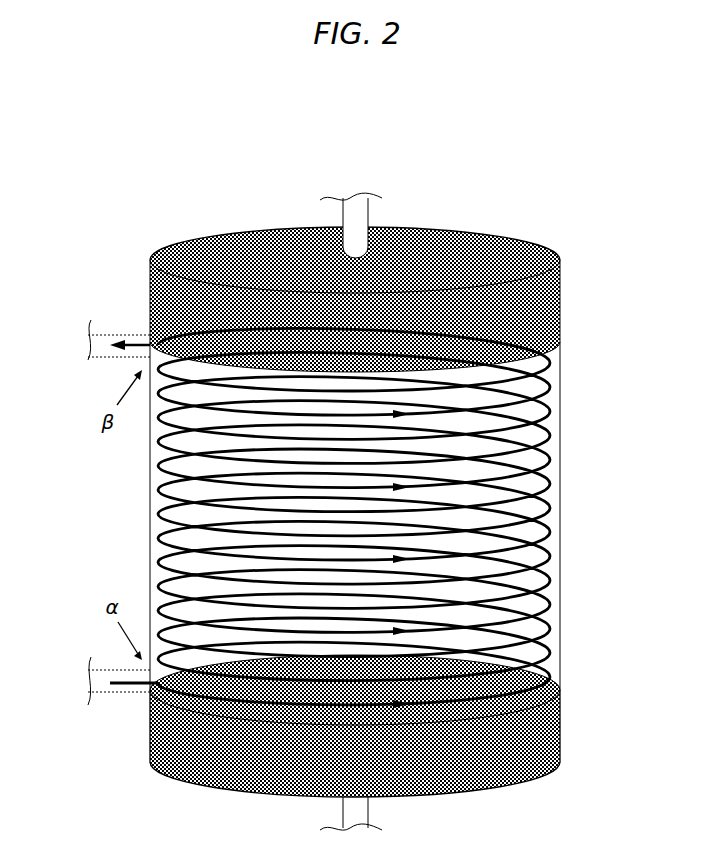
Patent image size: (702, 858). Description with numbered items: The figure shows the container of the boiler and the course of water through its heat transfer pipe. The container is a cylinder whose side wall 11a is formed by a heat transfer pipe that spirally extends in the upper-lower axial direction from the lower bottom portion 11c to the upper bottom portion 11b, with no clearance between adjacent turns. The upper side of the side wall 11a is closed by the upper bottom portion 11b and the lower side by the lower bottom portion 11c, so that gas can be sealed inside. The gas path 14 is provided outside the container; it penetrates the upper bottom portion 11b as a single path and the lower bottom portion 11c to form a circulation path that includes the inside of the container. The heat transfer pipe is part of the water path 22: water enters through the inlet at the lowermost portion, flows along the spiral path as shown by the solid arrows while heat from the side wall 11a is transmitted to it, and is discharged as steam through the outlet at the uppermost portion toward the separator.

The side wall 11a is at (150, 516).
The upper bottom portion 11b is at (238, 242).
The lower bottom portion 11c is at (210, 768).
The gas path 14 is at (370, 221).
The water path 22 is at (110, 335).